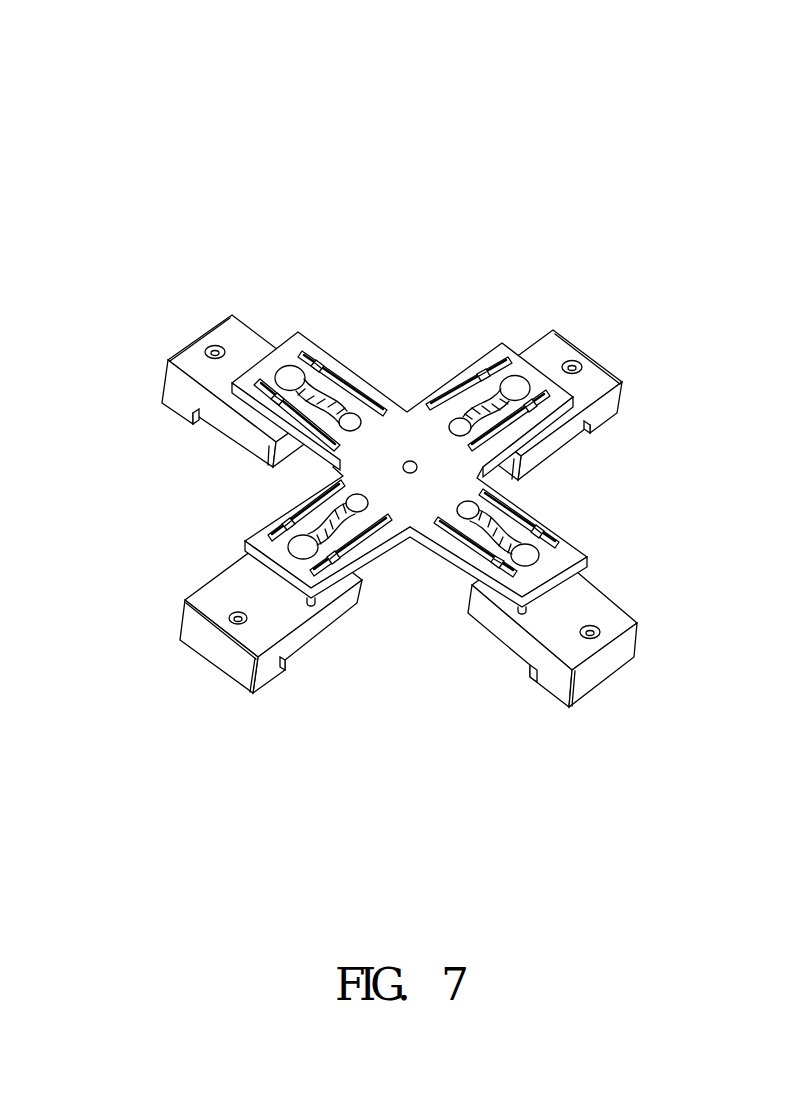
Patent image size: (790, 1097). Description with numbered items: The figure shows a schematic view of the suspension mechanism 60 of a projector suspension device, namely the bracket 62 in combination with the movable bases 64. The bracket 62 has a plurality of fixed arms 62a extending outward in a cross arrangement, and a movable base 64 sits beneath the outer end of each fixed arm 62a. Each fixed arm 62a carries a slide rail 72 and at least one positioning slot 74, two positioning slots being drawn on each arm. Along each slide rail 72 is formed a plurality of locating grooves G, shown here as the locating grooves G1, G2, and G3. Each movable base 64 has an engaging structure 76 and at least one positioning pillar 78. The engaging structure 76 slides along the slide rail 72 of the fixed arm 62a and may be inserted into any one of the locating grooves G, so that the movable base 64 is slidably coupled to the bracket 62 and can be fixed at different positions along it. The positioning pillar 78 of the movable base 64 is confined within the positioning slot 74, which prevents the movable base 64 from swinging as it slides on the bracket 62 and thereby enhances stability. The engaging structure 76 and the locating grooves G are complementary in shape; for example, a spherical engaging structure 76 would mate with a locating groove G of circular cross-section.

The suspension mechanism 60 is at (182, 48).
The bracket 62 is at (490, 330).
The fixed arm 62a is at (552, 353).
The movable base 64 is at (180, 313).
The slide rail 72 is at (335, 389).
The positioning slot 74 is at (318, 432).
The engaging structure 76 is at (303, 356).
The positioning pillar 78 is at (274, 401).
The locating groove G is at (548, 513).
The locating groove G1 is at (548, 547).
The locating groove G2 is at (537, 530).
The locating groove G3 is at (503, 492).